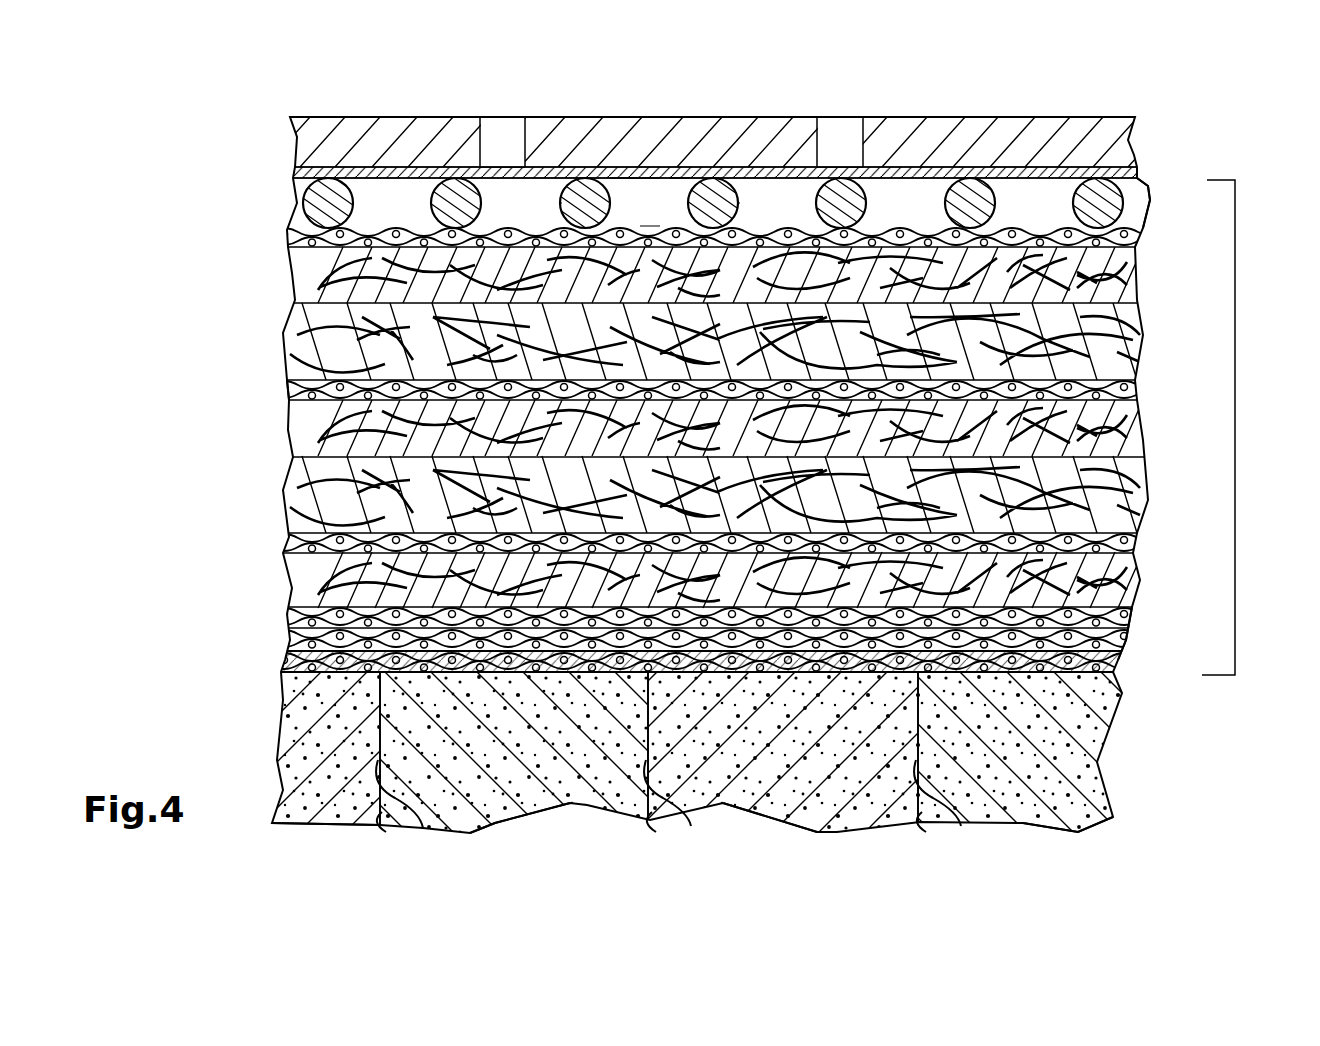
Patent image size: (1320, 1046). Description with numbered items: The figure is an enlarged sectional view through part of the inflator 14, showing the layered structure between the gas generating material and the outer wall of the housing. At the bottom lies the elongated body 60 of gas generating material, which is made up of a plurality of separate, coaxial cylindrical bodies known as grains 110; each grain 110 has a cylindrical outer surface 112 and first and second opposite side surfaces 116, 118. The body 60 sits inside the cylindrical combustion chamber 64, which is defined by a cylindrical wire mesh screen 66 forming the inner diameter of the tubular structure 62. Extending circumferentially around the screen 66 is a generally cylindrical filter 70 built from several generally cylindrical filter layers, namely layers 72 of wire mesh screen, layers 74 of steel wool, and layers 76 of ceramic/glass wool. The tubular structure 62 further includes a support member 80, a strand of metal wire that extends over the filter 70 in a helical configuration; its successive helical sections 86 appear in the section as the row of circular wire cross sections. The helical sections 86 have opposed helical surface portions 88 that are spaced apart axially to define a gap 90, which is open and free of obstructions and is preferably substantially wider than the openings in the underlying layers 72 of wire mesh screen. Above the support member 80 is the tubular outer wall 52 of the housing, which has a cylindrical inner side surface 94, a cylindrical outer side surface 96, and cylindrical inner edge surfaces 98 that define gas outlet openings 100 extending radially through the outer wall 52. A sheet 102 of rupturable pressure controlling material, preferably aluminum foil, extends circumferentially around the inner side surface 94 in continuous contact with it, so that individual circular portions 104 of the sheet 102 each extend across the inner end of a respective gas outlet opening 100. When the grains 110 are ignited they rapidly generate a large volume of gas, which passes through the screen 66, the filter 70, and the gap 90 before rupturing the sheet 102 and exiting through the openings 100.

The inflator 14 is at (253, 88).
The tubular outer wall 52 is at (295, 137).
The elongated cylindrical body of gas generating material 60 is at (270, 783).
The tubular structure 62 is at (1235, 430).
The combustion chamber 64 is at (463, 791).
The wire mesh screen 66 is at (290, 660).
The filter 70 is at (220, 397).
The layers of wire mesh screen 72 is at (289, 233).
The layers of steel wool 74 is at (294, 273).
The layers of ceramic/glass wool 76 is at (285, 333).
The support member 80 is at (300, 203).
The helical sections 86 is at (585, 198).
The opposed helical surface portions 88 is at (620, 176).
The gap 90 is at (649, 196).
The cylindrical inner side surface 94 is at (1152, 195).
The cylindrical outer side surface 96 is at (1090, 117).
The cylindrical inner edge surfaces 98 is at (523, 140).
The gas outlet openings 100 is at (502, 130).
The sheet of rupturable pressure controlling material 102 is at (295, 170).
The circular portions 104 is at (496, 162).
The grains 110 is at (282, 808).
The cylindrical outer surface 112 is at (1118, 628).
The first side surface 116 is at (422, 829).
The second side surface 118 is at (383, 815).